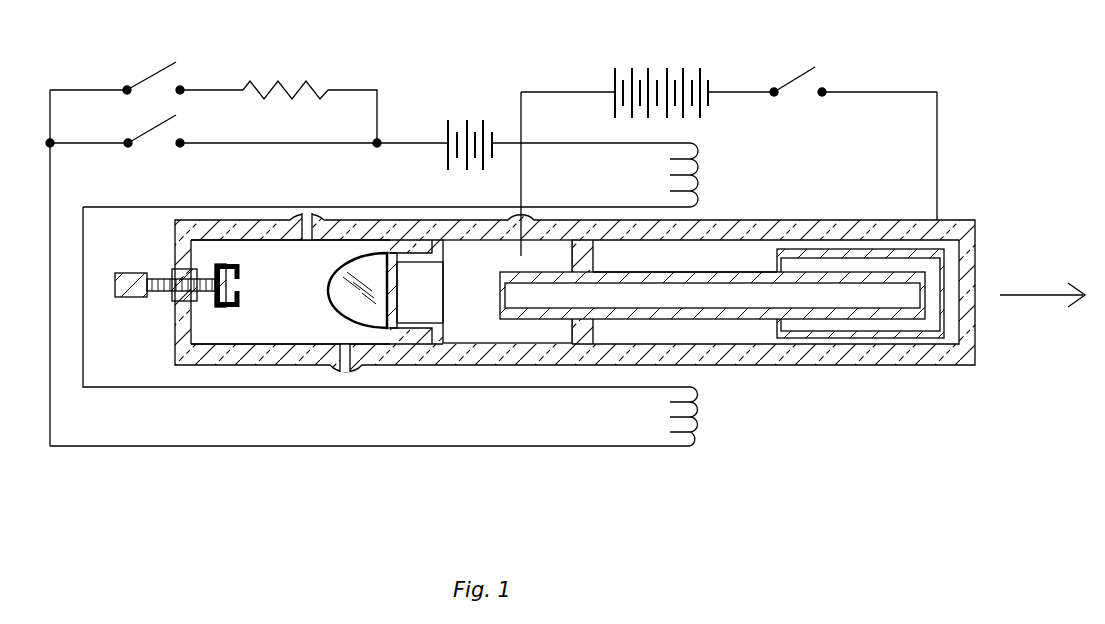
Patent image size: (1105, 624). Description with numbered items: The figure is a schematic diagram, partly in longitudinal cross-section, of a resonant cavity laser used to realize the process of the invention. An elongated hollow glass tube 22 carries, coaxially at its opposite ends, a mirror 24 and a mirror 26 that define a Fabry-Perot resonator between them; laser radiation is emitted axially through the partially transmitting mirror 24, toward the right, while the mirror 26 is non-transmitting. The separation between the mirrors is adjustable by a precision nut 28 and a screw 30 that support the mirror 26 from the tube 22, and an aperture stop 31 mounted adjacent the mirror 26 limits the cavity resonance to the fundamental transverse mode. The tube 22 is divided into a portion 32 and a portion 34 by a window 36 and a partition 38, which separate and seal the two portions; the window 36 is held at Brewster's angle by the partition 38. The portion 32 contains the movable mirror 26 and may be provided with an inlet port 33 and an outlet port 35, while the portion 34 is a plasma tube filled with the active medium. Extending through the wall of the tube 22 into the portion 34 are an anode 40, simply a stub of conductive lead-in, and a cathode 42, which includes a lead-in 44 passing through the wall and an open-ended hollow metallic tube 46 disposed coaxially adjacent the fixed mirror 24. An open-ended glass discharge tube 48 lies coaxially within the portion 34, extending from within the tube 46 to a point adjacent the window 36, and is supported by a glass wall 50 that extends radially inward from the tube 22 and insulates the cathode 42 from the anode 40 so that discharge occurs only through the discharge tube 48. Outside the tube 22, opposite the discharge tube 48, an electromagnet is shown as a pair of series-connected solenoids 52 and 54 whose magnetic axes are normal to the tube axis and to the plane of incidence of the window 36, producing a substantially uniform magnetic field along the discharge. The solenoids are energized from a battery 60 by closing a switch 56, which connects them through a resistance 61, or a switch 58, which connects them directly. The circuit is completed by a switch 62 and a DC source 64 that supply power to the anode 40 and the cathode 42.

The hollow glass tube 22 is at (885, 366).
The mirror 24 is at (975, 286).
The mirror 26 is at (230, 308).
The precision nut 28 is at (176, 268).
The screw 30 is at (158, 296).
The aperture stop 31 is at (240, 282).
The portion of tube 32 is at (270, 330).
The inlet port 33 is at (348, 374).
The portion of tube 34 is at (486, 330).
The outlet port 35 is at (307, 213).
The window 36 is at (346, 264).
The partition 38 is at (443, 255).
The anode 40 is at (521, 257).
The cathode 42 is at (885, 250).
The lead-in 44 is at (937, 170).
The metallic tube 46 is at (830, 250).
The discharge tube 48 is at (745, 272).
The glass wall 50 is at (593, 255).
The solenoid 52 is at (700, 410).
The solenoid 54 is at (708, 170).
The switch 56 is at (158, 68).
The switch 58 is at (158, 136).
The battery 60 is at (465, 120).
The resistance 61 is at (288, 80).
The switch 62 is at (806, 70).
The DC source 64 is at (690, 68).